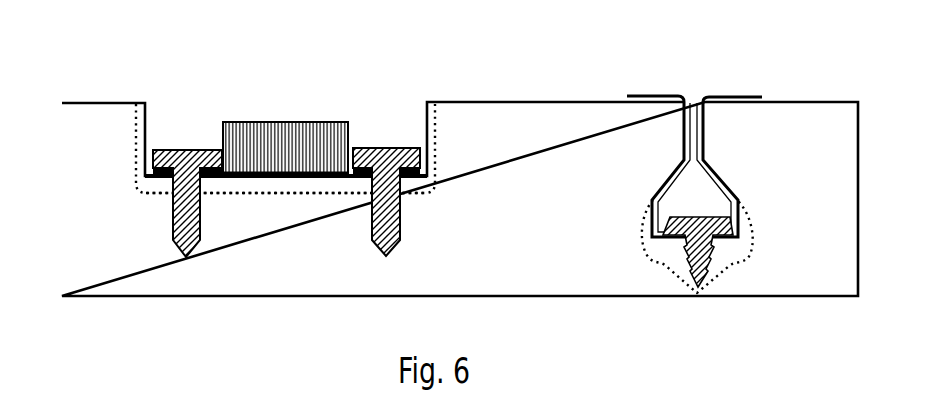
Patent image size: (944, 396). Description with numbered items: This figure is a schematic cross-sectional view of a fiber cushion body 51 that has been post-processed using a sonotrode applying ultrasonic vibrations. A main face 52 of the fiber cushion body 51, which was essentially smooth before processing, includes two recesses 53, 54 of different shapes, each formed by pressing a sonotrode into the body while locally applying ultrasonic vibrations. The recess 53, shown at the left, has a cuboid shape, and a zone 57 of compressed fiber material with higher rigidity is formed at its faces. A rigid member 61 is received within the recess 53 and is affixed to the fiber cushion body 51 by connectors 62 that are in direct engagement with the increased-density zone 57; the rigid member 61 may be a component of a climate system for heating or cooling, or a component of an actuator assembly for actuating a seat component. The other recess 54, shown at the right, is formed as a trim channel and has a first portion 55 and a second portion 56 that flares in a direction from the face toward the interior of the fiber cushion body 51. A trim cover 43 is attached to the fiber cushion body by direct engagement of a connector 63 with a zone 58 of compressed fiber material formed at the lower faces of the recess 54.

The fiber cushion body 51 is at (61, 52).
The main face 52 is at (100, 102).
The recess 53 is at (148, 117).
The zone 57 is at (417, 187).
The rigid member 61 is at (322, 122).
The connectors 62 is at (200, 227).
The trim cover 43 is at (643, 93).
The recess 54 is at (705, 102).
The first portion 55 is at (703, 137).
The second portion 56 is at (730, 197).
The zone 58 is at (735, 245).
The connector 63 is at (683, 243).